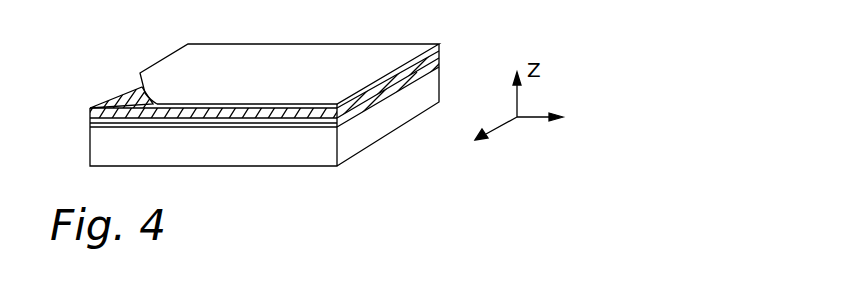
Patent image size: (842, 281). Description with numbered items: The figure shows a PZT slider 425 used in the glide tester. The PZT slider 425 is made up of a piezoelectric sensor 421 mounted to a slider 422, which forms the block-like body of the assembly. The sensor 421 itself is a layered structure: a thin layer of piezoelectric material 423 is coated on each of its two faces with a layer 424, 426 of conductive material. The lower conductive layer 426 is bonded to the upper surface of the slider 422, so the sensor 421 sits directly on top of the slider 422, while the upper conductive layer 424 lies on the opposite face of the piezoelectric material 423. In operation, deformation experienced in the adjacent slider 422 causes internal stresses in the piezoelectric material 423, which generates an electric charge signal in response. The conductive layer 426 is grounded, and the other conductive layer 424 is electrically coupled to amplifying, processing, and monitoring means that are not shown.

The piezoelectric sensor 421 is at (446, 35).
The slider 422 is at (197, 152).
The piezoelectric material 423 is at (125, 95).
The layer of conductive material 424 is at (188, 53).
The PZT slider 425 is at (78, 105).
The layer of conductive material 426 is at (375, 96).